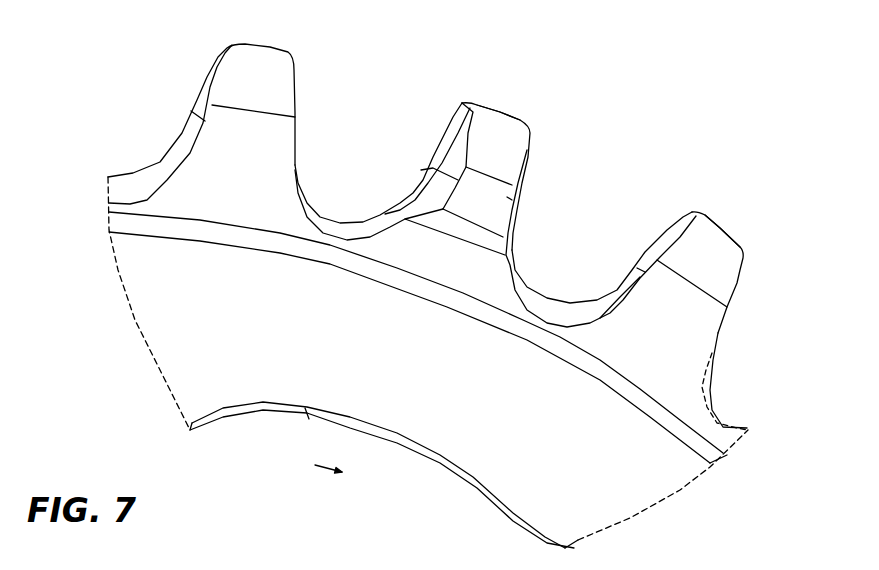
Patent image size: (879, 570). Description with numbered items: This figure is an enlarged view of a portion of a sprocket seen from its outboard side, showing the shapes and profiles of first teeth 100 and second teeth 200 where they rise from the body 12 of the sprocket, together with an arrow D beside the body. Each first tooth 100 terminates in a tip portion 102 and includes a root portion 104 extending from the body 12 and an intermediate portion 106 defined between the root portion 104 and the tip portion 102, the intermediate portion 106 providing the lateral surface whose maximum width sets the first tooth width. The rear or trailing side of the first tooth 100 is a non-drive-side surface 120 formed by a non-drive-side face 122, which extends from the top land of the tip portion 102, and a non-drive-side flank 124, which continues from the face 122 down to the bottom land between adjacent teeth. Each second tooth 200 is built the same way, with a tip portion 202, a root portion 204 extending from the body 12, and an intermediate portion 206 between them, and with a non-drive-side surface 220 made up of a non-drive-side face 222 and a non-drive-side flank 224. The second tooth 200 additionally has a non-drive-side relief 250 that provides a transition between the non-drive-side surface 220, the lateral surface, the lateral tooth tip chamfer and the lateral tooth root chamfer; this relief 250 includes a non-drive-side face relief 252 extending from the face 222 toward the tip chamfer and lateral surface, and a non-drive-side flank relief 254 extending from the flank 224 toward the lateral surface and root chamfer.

The body 12 is at (490, 468).
The first teeth 100 is at (762, 172).
The tip portion 102 is at (737, 230).
The root portion 104 is at (638, 375).
The intermediate portion 106 is at (731, 331).
The non-drive-side surface 120 is at (608, 242).
The non-drive-side face 122 is at (653, 252).
The non-drive-side flank 124 is at (627, 283).
The second teeth 200 is at (525, 68).
The tip portion 202 is at (523, 117).
The root portion 204 is at (447, 272).
The intermediate portion 206 is at (530, 190).
The non-drive-side surface 220 is at (381, 135).
The non-drive-side face 222 is at (440, 145).
The non-drive-side flank 224 is at (417, 181).
The non-drive-side relief 250 is at (405, 238).
The non-drive-side face relief 252 is at (457, 153).
The non-drive-side flank relief 254 is at (432, 194).
The direction of rotation D is at (328, 480).